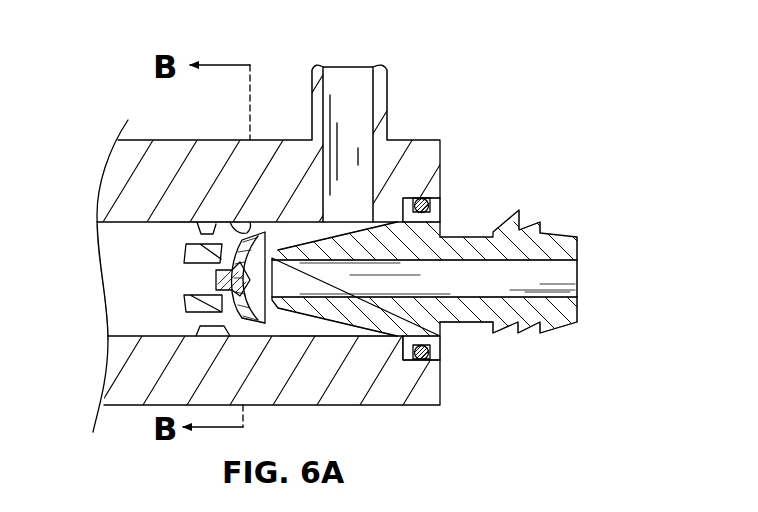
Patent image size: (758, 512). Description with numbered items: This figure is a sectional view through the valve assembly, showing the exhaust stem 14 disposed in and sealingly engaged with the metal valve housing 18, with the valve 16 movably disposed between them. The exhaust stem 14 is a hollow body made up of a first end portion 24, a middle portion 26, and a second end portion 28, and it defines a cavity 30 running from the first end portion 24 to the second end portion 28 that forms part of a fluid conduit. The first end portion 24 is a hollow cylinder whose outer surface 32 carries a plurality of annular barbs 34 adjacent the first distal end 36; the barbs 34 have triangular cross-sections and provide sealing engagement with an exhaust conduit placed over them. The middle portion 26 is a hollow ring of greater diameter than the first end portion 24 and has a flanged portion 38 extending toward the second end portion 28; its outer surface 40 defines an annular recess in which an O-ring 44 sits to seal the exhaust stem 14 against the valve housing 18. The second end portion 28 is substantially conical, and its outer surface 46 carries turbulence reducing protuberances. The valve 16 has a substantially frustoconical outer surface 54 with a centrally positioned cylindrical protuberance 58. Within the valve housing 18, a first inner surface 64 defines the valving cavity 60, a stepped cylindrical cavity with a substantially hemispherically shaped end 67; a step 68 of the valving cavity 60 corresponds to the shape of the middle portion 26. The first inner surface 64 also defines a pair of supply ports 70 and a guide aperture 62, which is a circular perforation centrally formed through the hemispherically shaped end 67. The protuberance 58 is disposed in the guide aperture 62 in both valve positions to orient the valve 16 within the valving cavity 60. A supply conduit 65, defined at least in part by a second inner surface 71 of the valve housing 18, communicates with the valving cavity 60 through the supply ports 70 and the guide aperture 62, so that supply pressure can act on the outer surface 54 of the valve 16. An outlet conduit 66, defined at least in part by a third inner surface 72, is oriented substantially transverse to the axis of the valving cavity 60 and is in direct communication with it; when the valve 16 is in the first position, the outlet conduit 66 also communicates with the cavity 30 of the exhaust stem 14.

The exhaust stem 14 is at (564, 331).
The valve 16 is at (259, 333).
The valve housing 18 is at (152, 140).
The first end portion 24 is at (462, 238).
The middle portion 26 is at (409, 200).
The second end portion 28 is at (311, 240).
The cavity 30 is at (580, 280).
The outer surface 32 is at (465, 325).
The annular barbs 34 is at (519, 211).
The first distal end 36 is at (579, 240).
The flanged portion 38 is at (400, 362).
The outer surface 40 is at (436, 203).
The O-ring 44 is at (433, 358).
The outer surface 46 is at (345, 338).
The outer surface 54 is at (210, 304).
The centrally positioned cylindrical protuberance 58 is at (186, 270).
The valving cavity 60 is at (281, 240).
The guide aperture 62 is at (186, 296).
The first inner surface 64 is at (293, 338).
The supply conduit 65 is at (104, 250).
The outlet conduit 66 is at (351, 72).
The substantially hemispherically shaped end 67 is at (247, 222).
The step 68 is at (410, 346).
The supply ports 70 is at (201, 231).
The second inner surface 71 is at (173, 226).
The third inner surface 72 is at (376, 107).